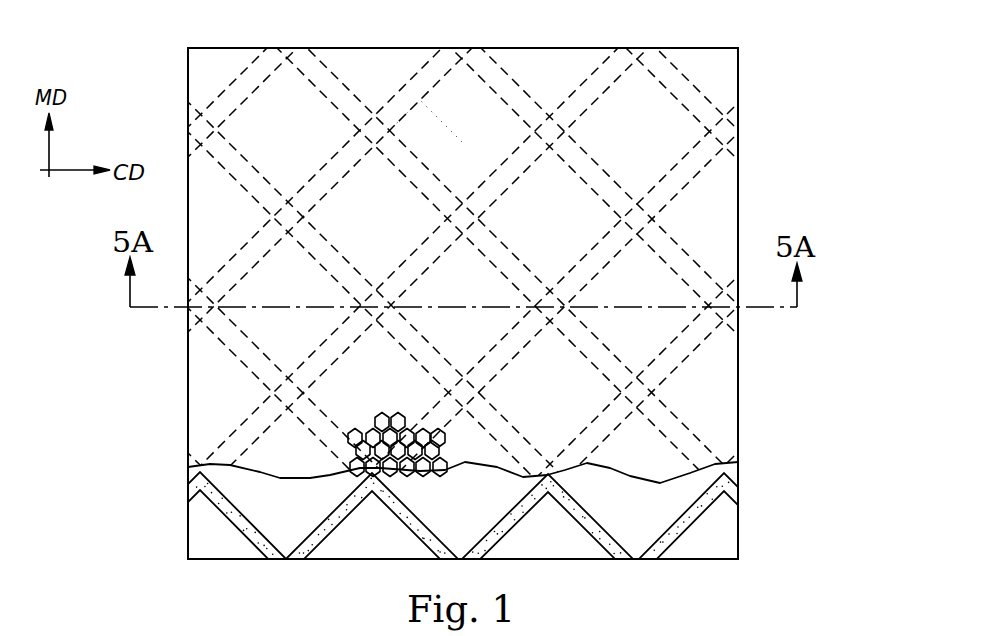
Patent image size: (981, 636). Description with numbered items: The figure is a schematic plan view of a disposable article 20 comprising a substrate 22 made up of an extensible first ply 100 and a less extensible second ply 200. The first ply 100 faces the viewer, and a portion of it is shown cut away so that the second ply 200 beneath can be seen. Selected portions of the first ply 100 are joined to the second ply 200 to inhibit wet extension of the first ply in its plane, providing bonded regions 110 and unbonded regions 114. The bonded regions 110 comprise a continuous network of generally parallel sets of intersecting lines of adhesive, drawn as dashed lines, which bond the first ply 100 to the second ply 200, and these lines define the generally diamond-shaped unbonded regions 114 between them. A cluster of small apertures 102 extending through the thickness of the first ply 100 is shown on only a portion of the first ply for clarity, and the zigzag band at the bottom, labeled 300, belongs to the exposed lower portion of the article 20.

The disposable article 20 is at (786, 76).
The substrate 22 is at (751, 175).
The first ply 100 is at (479, 318).
The apertures 102 is at (434, 480).
The bonded regions 110 is at (513, 83).
The unbonded regions 114 is at (440, 103).
The second ply 200 is at (708, 518).
The bond between layers 300 is at (622, 553).